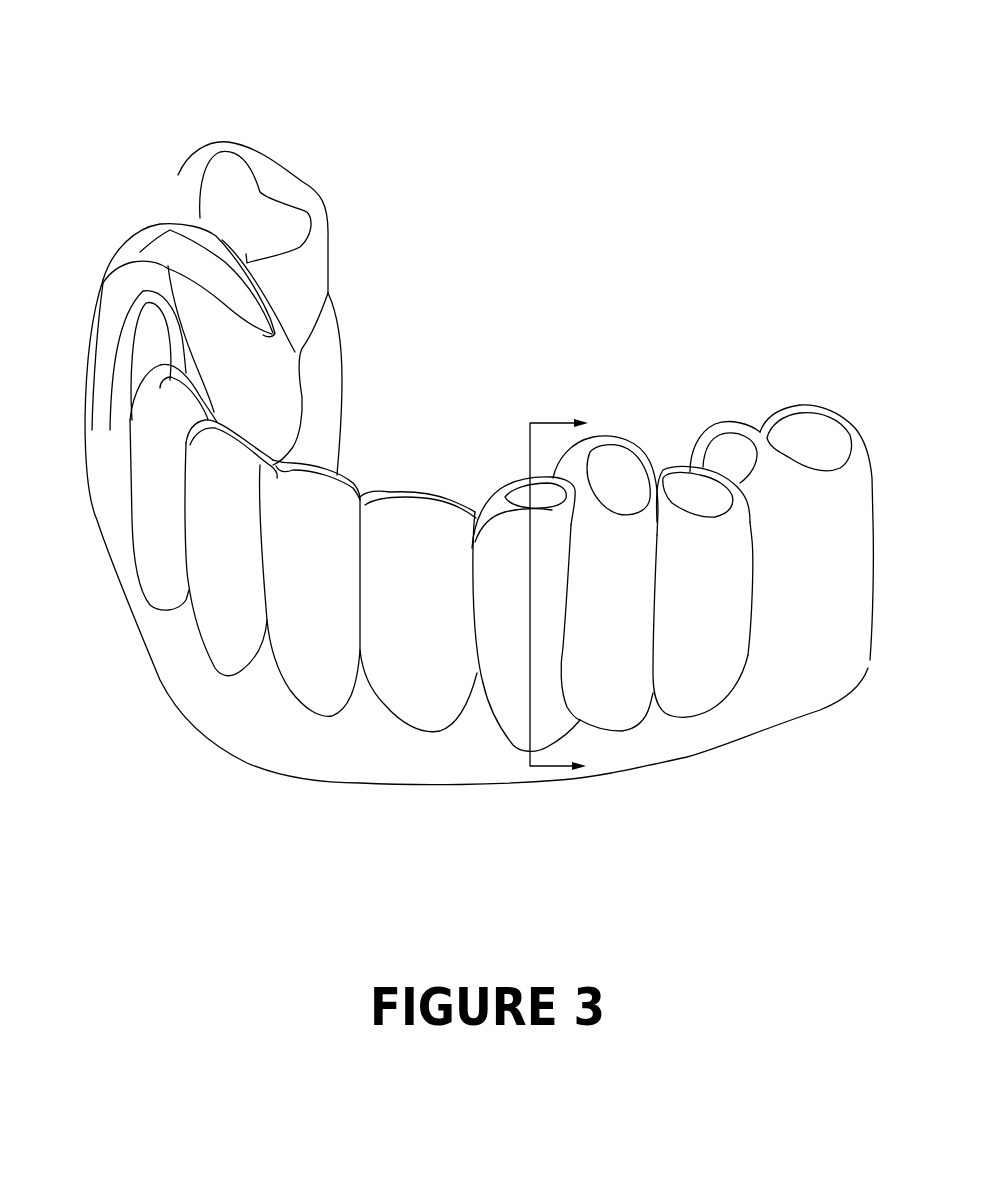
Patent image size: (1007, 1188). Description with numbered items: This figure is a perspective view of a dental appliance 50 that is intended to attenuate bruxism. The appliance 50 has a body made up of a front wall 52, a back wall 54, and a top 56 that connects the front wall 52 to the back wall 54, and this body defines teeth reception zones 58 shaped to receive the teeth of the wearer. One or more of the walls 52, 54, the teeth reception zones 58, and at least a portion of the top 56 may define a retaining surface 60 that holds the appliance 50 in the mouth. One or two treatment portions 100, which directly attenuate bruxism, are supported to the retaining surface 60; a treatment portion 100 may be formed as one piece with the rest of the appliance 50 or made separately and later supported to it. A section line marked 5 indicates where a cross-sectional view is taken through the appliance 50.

The section line 5- 5 is at (570, 592).
The dental appliance 50 is at (503, 218).
The front wall 52 is at (233, 702).
The back wall 54 is at (317, 435).
The top 56 is at (183, 445).
The teeth reception zones 58 is at (217, 537).
The retaining surface 60 is at (525, 397).
The treatment portion 100 is at (173, 250).